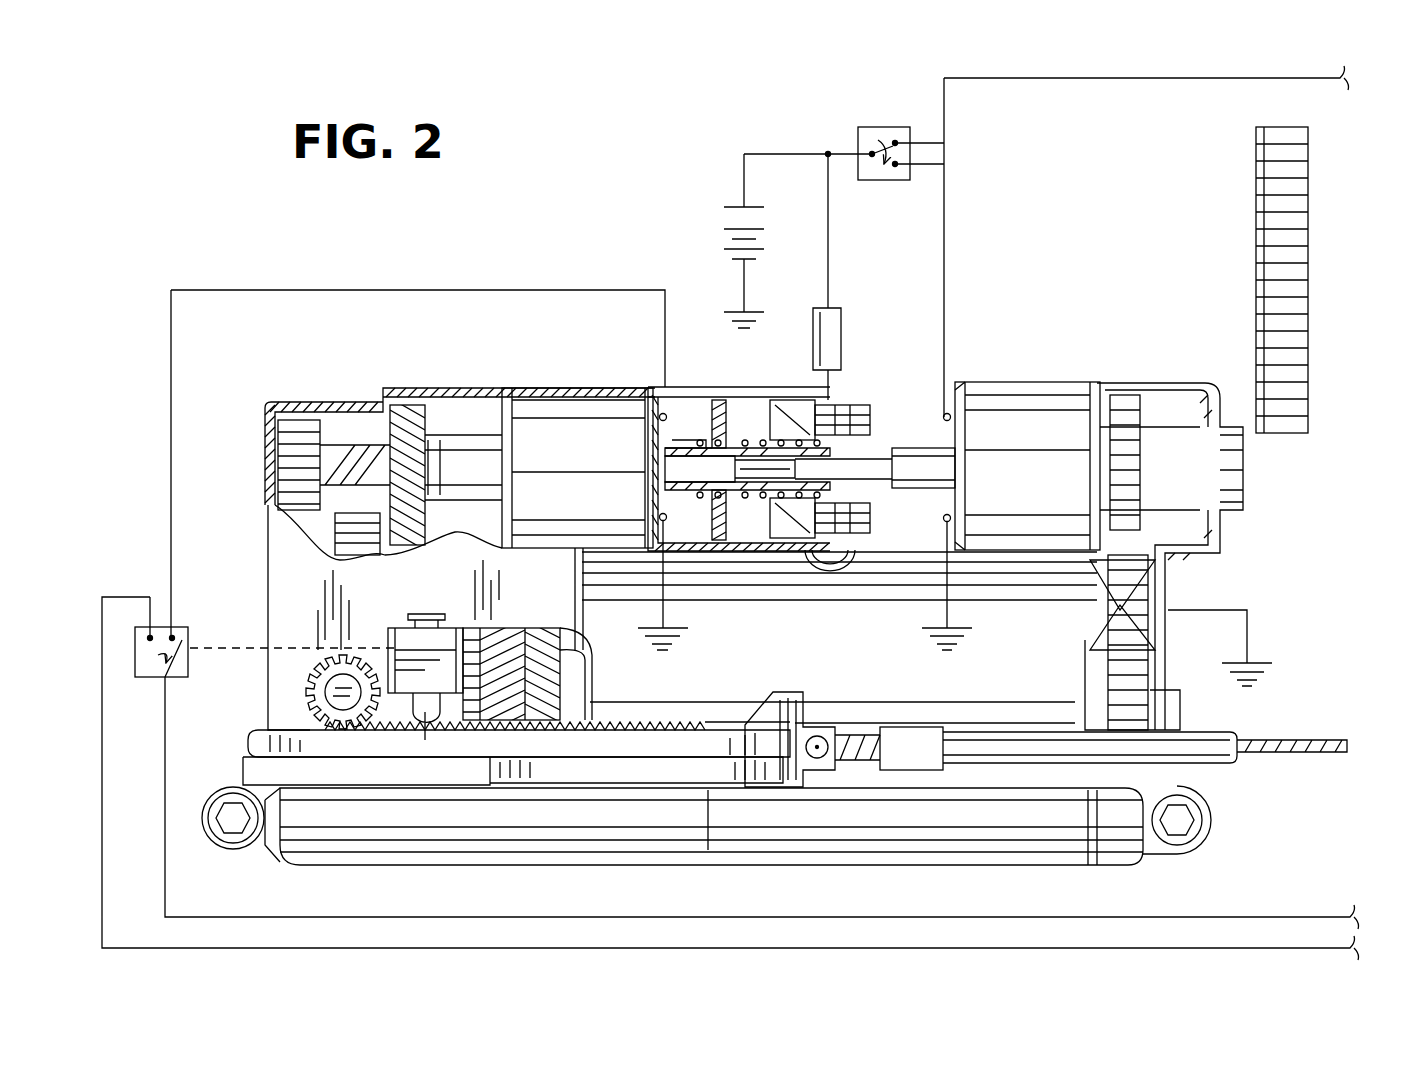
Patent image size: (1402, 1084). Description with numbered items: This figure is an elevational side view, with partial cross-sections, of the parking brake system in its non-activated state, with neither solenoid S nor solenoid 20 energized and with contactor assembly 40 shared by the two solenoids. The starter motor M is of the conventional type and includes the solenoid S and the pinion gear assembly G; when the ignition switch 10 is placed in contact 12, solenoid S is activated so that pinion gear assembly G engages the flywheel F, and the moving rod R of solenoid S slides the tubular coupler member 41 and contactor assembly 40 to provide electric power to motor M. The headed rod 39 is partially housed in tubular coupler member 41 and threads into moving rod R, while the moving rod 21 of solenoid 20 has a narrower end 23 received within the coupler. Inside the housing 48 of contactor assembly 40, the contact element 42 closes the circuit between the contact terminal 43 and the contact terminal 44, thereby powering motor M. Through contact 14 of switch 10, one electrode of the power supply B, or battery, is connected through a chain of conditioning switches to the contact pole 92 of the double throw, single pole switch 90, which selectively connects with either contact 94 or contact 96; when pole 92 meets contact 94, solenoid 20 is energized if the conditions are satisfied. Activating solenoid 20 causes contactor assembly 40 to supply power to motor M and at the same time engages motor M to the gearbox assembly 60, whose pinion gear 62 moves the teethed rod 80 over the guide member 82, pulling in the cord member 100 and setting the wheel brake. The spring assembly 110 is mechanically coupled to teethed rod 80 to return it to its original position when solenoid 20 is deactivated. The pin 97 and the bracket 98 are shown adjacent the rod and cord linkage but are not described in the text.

The ignition switch 10 is at (868, 125).
The contact 12 is at (896, 165).
The contact 14 is at (896, 143).
The solenoid 20 is at (595, 425).
The moving rod 21 is at (458, 458).
The narrower end 23 is at (692, 468).
The headed rod 39 is at (862, 460).
The contactor assembly 40 is at (747, 384).
The tubular coupler member 41 is at (690, 446).
The contact element 42 is at (717, 400).
The contact terminal 43 is at (772, 400).
The contact terminal 44 is at (776, 512).
The housing 48 is at (706, 404).
The gearbox assembly 60 is at (360, 398).
The pinion gear 62 is at (316, 695).
The teethed rod 80 is at (258, 745).
The guide member 82 is at (250, 768).
The switch 90 is at (196, 660).
The contact pole 92 is at (166, 667).
The contact 94 is at (174, 635).
The contact 96 is at (148, 640).
The pin 97 is at (425, 705).
The bracket 98 is at (784, 700).
The cord member 100 is at (1277, 752).
The spring assembly 110 is at (365, 812).
The power supply B is at (713, 218).
The flywheel F is at (1273, 288).
The solenoid S is at (1022, 425).
The moving rod R is at (930, 455).
The pinion gear assembly G is at (1226, 526).
The starter motor M is at (1053, 630).